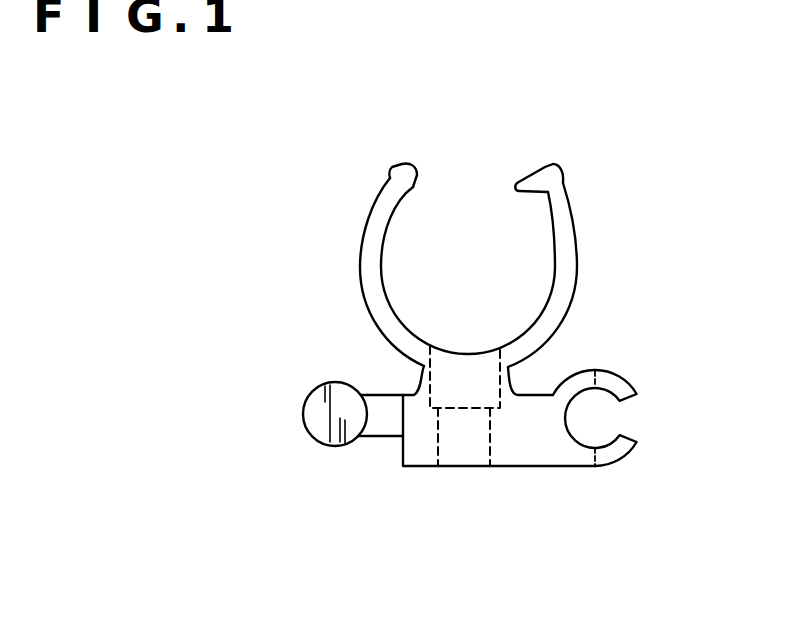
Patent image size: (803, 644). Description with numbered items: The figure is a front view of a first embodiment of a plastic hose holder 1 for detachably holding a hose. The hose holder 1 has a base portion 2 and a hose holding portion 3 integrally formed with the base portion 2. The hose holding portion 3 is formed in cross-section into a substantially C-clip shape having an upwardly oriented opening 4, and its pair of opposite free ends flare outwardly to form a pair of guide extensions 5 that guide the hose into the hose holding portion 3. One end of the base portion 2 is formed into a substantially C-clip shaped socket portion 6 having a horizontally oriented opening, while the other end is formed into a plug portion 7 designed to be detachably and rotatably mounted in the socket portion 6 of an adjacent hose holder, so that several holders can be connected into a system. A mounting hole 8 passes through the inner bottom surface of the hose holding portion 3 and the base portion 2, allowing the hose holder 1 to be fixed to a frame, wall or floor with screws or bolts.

The hose holder 1 is at (603, 227).
The base portion 2 is at (527, 460).
The hose holding portion 3 is at (360, 252).
The opening 4 is at (458, 178).
The guide extensions 5 is at (403, 160).
The socket portion 6 is at (632, 382).
The plug portion 7 is at (310, 429).
The mounting hole 8 is at (453, 460).